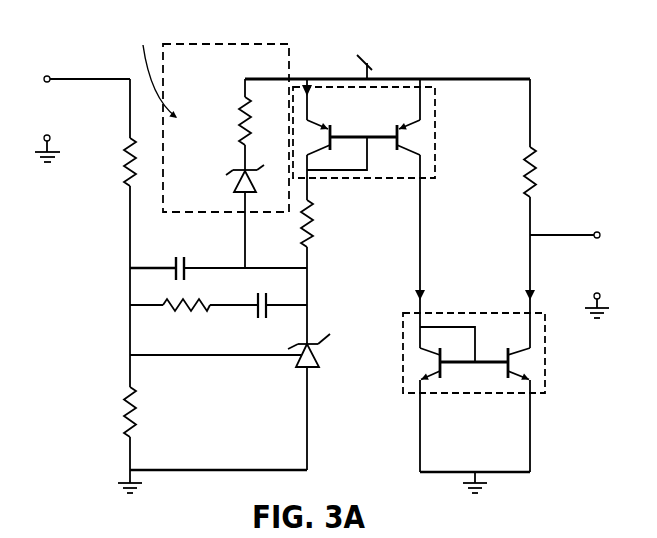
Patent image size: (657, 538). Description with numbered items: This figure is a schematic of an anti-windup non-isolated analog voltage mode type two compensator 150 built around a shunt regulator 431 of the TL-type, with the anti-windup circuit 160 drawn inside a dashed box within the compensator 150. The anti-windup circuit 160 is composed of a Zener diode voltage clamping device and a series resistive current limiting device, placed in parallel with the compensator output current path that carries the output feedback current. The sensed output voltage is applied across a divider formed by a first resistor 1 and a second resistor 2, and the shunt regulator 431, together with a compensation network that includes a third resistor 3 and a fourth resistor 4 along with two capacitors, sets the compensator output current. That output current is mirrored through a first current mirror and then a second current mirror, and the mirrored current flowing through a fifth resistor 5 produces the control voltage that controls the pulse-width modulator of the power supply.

The compensator 150 is at (319, 254).
The anti-windup circuit 160 is at (226, 156).
The TL431 shunt regulator 431 is at (282, 369).
The resistor R1 1 is at (113, 162).
The resistor R2 2 is at (112, 412).
The resistor R3 3 is at (186, 323).
The resistor R4 4 is at (323, 223).
The resistor R5 5 is at (546, 172).